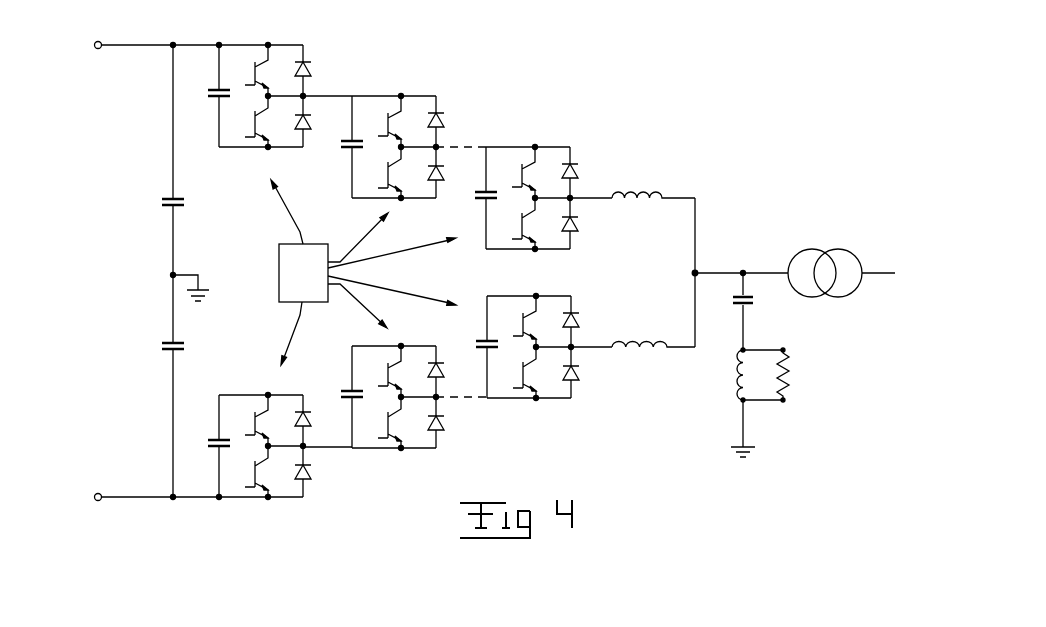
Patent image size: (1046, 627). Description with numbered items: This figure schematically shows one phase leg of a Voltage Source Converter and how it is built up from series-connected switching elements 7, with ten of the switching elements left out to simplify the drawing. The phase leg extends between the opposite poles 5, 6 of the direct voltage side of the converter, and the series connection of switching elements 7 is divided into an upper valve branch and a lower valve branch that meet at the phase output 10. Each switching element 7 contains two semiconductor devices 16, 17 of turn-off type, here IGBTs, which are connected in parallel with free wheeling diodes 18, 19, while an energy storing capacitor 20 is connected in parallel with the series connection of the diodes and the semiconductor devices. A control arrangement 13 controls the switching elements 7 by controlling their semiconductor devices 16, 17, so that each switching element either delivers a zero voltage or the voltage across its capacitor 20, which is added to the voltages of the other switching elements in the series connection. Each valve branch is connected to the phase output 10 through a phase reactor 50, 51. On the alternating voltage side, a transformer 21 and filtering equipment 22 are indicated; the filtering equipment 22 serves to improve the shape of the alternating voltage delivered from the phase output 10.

The pole 5 is at (117, 45).
The pole 6 is at (117, 497).
The switching element 7 is at (418, 150).
The phase output 10 is at (705, 272).
The control arrangement 13 is at (279, 268).
The semiconductor device 16 is at (525, 163).
The semiconductor device 17 is at (530, 242).
The diode 18 is at (578, 171).
The diode 19 is at (576, 219).
The energy storing capacitor 20 is at (480, 207).
The transformer 21 is at (818, 252).
The filtering equipment 22 is at (717, 385).
The phase reactor 50 is at (643, 186).
The phase reactor 51 is at (627, 338).